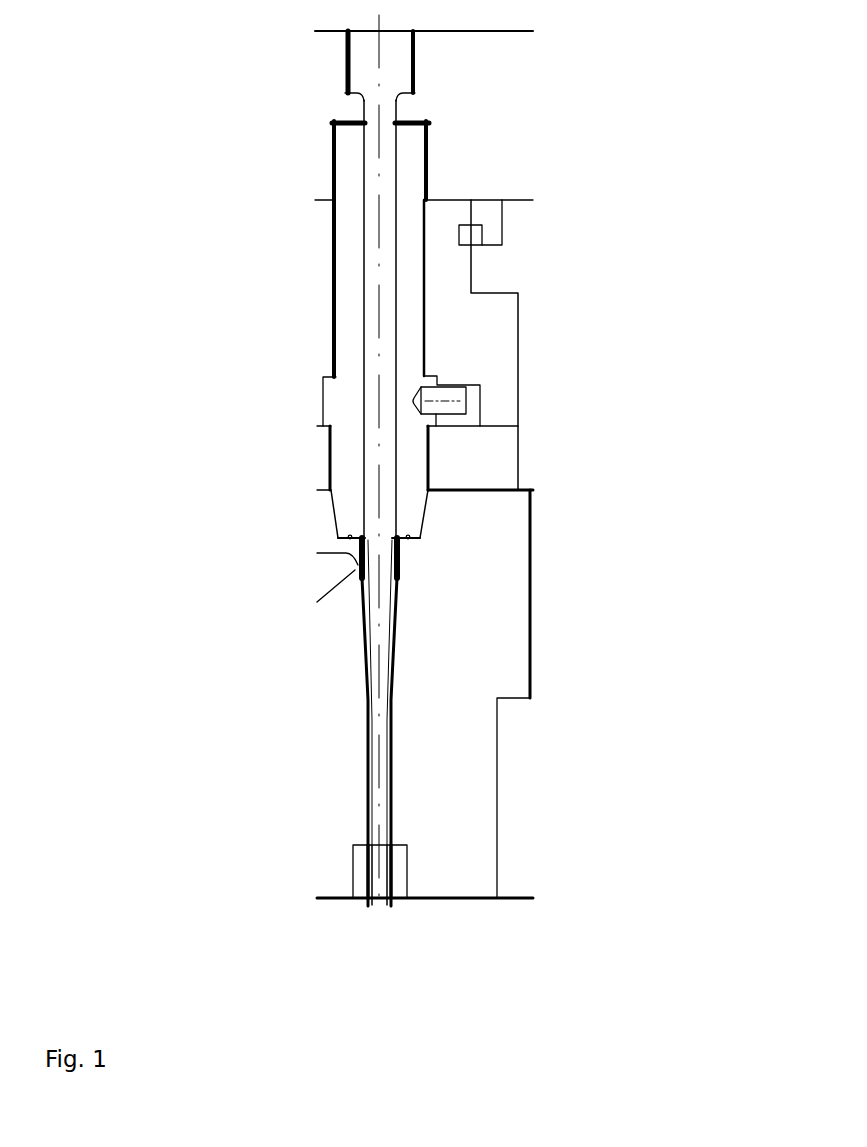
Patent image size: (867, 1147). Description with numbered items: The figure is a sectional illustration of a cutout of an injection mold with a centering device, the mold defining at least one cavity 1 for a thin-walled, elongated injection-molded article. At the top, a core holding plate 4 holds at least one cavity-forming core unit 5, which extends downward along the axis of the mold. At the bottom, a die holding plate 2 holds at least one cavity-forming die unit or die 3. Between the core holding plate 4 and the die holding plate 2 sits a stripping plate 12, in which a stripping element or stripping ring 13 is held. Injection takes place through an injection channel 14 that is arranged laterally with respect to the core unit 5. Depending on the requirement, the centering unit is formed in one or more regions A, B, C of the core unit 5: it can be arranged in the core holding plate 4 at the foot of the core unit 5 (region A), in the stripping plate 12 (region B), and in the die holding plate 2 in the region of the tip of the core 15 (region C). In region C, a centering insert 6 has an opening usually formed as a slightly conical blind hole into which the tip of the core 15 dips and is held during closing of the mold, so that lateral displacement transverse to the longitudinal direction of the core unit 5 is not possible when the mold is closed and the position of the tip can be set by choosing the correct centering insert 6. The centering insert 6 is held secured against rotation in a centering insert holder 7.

The cavity 1 is at (395, 740).
The die holding plate 2 is at (313, 739).
The die unit 3 is at (453, 719).
The core holding plate 4 is at (257, 93).
The core unit 5 is at (382, 192).
The centering insert 6 is at (398, 890).
The centering insert holder 7 is at (348, 892).
The stripping plate 12 is at (307, 460).
The stripping ring 13 is at (345, 520).
The injection channel 14 is at (327, 575).
The tip of the core 15 is at (382, 872).
The region A is at (320, 177).
The region B is at (437, 453).
The region C is at (342, 873).